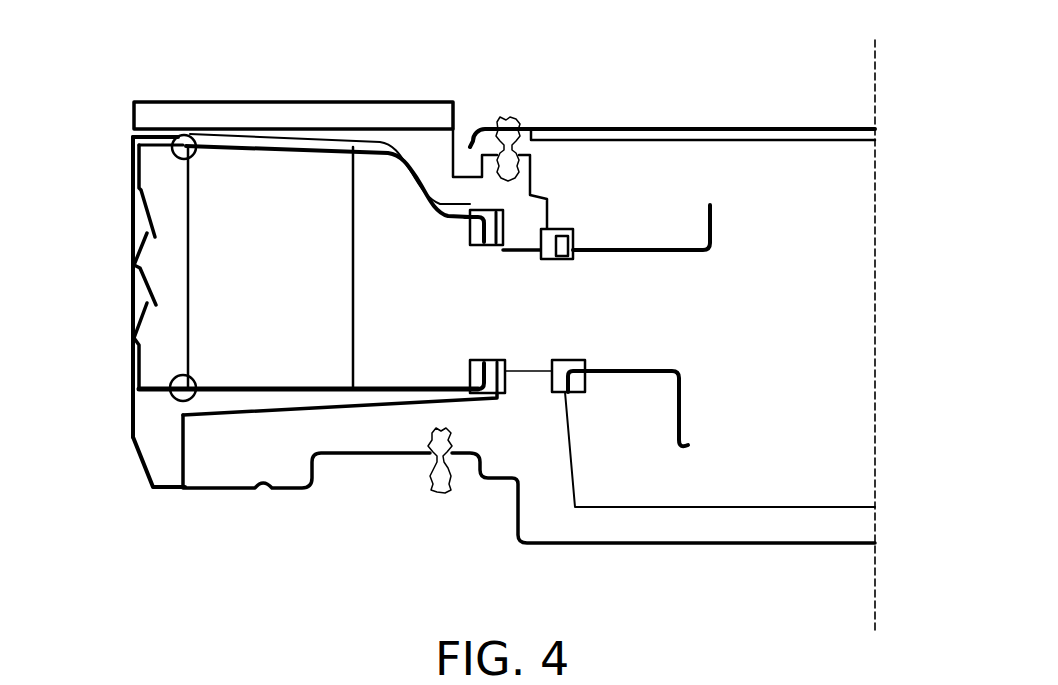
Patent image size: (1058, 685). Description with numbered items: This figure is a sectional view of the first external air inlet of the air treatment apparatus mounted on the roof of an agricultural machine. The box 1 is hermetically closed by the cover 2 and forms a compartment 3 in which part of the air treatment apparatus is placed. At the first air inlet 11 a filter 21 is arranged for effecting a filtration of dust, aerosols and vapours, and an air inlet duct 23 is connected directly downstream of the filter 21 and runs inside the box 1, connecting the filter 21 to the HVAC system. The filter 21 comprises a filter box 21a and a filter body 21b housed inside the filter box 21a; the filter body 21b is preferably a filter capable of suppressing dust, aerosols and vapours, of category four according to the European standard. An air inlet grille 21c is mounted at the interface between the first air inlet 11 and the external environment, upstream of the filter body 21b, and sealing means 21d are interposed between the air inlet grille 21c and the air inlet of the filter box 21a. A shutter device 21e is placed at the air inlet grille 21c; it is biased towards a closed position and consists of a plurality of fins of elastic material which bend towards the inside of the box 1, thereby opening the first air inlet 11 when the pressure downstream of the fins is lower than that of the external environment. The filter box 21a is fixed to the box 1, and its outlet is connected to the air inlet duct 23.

The box 1 is at (458, 98).
The cover 2 is at (788, 127).
The compartment 3 is at (540, 192).
The first air inlet 11 is at (122, 213).
The filter 21 is at (277, 133).
The filter box 21a is at (394, 150).
The filter body 21b is at (328, 368).
The air inlet grille 21c is at (127, 418).
The sealing means 21d is at (196, 135).
The shutter device 21e is at (140, 222).
The air inlet duct 23 is at (645, 245).